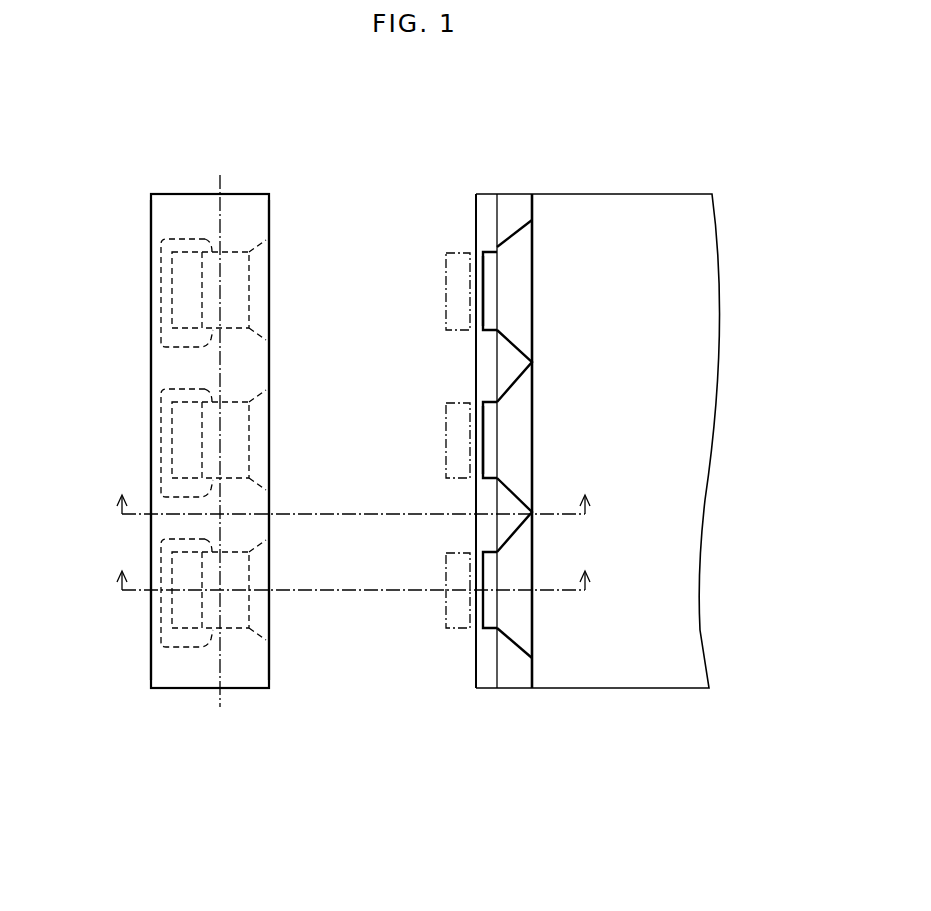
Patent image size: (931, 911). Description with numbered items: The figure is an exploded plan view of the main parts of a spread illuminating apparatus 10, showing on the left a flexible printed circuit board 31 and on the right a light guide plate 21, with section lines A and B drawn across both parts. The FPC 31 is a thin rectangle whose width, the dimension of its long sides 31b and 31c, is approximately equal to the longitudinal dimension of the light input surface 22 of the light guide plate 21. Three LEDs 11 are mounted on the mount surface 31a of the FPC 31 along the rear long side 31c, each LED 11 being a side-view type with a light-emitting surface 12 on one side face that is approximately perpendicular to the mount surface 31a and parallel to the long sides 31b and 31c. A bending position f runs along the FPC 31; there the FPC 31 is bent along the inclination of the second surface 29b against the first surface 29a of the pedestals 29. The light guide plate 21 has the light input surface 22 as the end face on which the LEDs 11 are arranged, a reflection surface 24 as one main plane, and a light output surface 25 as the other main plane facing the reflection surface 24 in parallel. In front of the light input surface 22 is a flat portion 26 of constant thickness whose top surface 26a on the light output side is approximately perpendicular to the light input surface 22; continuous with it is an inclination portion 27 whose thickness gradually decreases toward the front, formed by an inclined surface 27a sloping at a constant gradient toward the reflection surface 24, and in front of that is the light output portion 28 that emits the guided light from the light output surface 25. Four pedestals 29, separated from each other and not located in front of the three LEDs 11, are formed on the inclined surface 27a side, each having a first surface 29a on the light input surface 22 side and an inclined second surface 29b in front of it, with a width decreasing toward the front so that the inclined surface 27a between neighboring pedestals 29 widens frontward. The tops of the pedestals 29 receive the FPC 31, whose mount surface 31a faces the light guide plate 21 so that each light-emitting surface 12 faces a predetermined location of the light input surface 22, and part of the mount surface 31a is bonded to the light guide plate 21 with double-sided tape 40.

The spread illuminating apparatus 10 is at (82, 116).
The LED 11 is at (178, 290).
The light-emitting surface 12 is at (155, 344).
The light guide plate 21 is at (699, 194).
The light input surface 22 is at (475, 533).
The reflection surface 24 is at (685, 612).
The light output surface 25 is at (705, 370).
The flat portion 26 is at (490, 450).
The top surface 26a is at (500, 470).
The inclination portion 27 is at (490, 300).
The inclined surface 27a is at (500, 320).
The light output portion 28 is at (693, 455).
The pedestal 29 is at (522, 218).
The first surface 29a is at (487, 205).
The second surface 29b is at (513, 208).
The flexible printed circuit board 31 is at (247, 691).
The mount surface 31a is at (175, 678).
The long side 31b is at (270, 222).
The long side 31c is at (151, 240).
The double-sided tape 40 is at (255, 365).
The bending position f is at (218, 425).
The section A- A is at (355, 495).
The section B- B is at (355, 572).